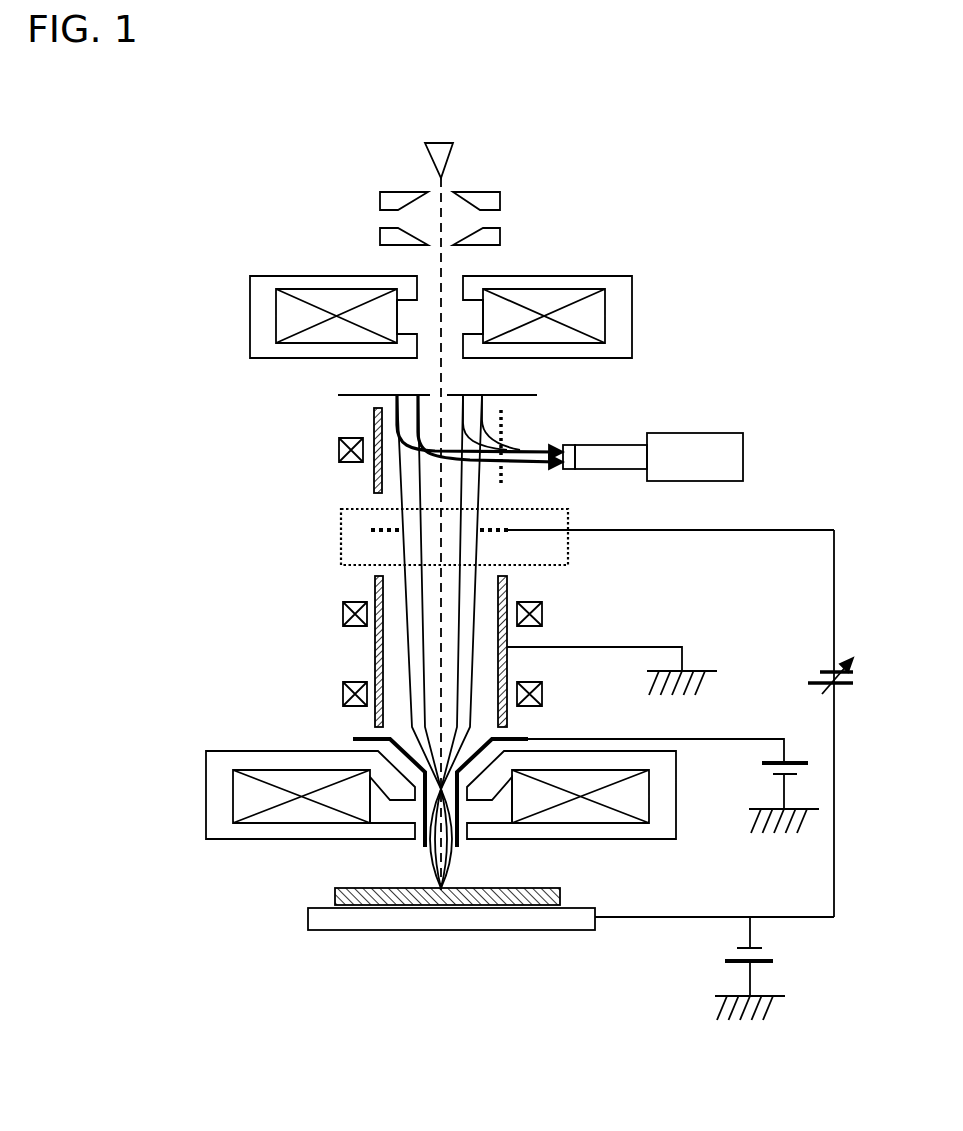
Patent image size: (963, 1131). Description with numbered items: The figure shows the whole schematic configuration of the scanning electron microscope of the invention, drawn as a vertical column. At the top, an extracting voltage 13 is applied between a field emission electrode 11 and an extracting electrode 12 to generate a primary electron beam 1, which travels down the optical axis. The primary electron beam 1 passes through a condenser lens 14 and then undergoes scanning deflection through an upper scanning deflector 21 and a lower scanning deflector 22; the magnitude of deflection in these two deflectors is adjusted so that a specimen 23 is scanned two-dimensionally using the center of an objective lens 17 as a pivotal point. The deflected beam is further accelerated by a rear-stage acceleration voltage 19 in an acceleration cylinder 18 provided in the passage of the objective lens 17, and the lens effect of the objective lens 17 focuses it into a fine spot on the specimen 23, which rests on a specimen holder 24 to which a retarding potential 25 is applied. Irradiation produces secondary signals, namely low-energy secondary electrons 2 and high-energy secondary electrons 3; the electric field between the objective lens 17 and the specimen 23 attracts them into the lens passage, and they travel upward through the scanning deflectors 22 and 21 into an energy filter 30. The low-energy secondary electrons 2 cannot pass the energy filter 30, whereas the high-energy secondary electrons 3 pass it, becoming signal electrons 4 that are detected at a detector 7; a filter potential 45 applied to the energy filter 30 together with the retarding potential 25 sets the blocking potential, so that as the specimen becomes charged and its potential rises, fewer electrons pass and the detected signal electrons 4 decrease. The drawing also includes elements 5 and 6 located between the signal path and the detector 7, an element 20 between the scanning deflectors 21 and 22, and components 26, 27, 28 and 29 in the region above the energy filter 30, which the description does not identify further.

The primary electron beam 1 is at (441, 186).
The low-energy secondary electrons 2 is at (438, 862).
The high-energy secondary electrons 3 is at (448, 872).
The signal electrons 4 is at (473, 433).
The scintillator 5 is at (570, 445).
The light guide 6 is at (612, 445).
The detector 7 is at (743, 460).
The field emission electrode 11 is at (425, 143).
The extracting electrode 12 is at (388, 192).
The extracting voltage 13 is at (383, 237).
The condenser lens 14 is at (250, 325).
The objective lens 17 is at (206, 751).
The acceleration cylinder 18 is at (520, 739).
The rear-stage acceleration voltage 19 is at (762, 763).
The deflector electrode 20 is at (375, 645).
The upper scanning deflector 21 is at (343, 612).
The lower scanning deflector 22 is at (343, 694).
The specimen 23 is at (335, 890).
The specimen holder 24 is at (308, 918).
The retarding potential 25 is at (773, 961).
The E x B deflector electrode 26 is at (374, 410).
The E x B deflector electrode 27 is at (501, 486).
The E x B deflector coil 28 is at (339, 452).
The E x B deflector 29 is at (338, 395).
The energy filter 30 is at (341, 530).
The filter potential Vf 45 is at (808, 683).